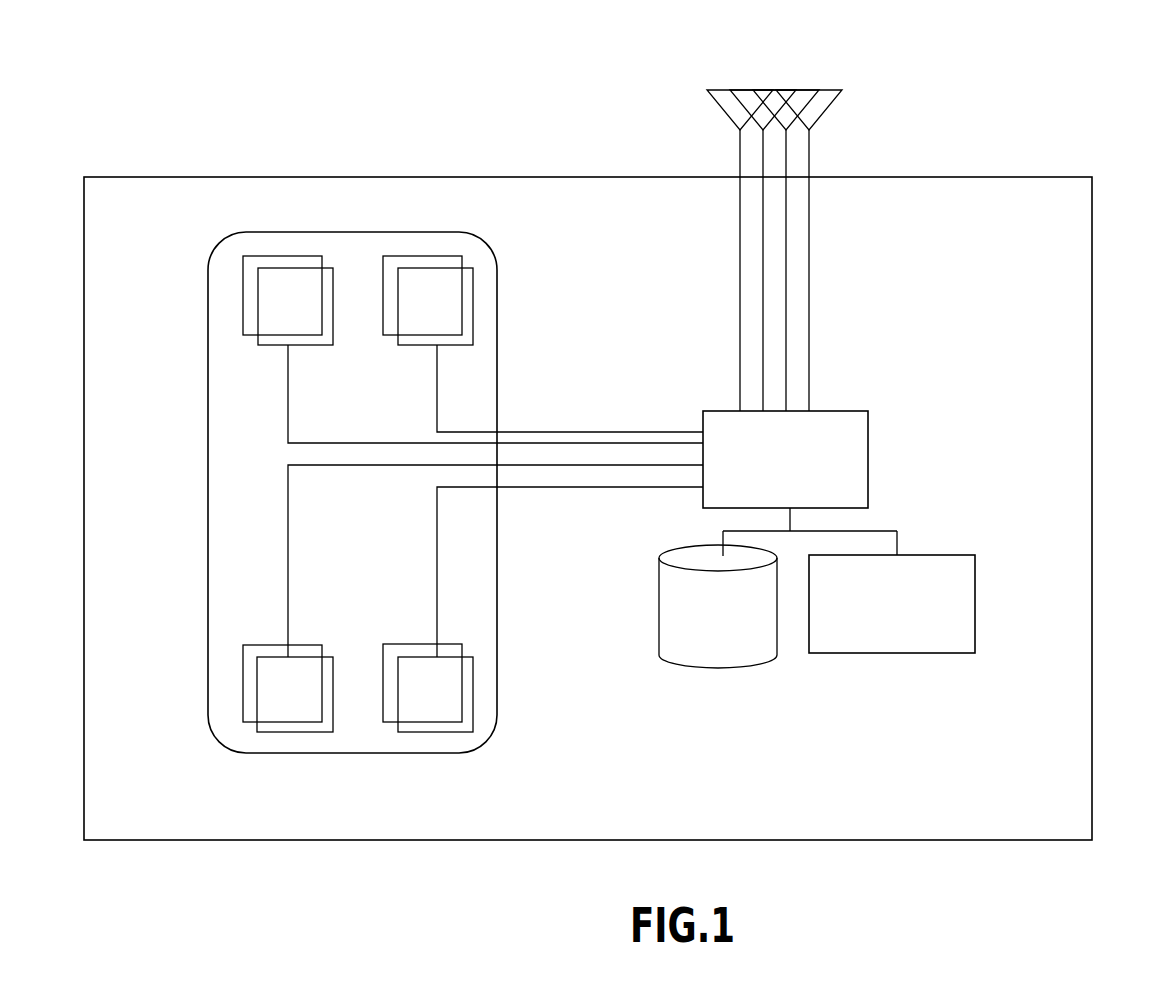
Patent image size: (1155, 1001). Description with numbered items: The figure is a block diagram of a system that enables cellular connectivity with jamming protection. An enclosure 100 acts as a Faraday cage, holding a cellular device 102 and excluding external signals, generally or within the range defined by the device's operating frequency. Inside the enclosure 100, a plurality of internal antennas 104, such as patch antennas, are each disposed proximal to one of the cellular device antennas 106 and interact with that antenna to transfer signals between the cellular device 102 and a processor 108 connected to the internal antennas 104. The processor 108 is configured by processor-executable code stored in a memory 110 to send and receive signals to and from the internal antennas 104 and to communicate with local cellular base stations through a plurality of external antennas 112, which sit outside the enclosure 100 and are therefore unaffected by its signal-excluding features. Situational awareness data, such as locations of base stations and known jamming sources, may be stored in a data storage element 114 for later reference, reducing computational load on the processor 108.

The enclosure 100 is at (1094, 217).
The cellular device 102 is at (207, 445).
The internal antennas 104 is at (308, 346).
The cellular device antennas 106 is at (243, 285).
The processor 108 is at (869, 445).
The memory 110 is at (976, 583).
The external antennas 112 is at (836, 99).
The data storage element 114 is at (658, 613).